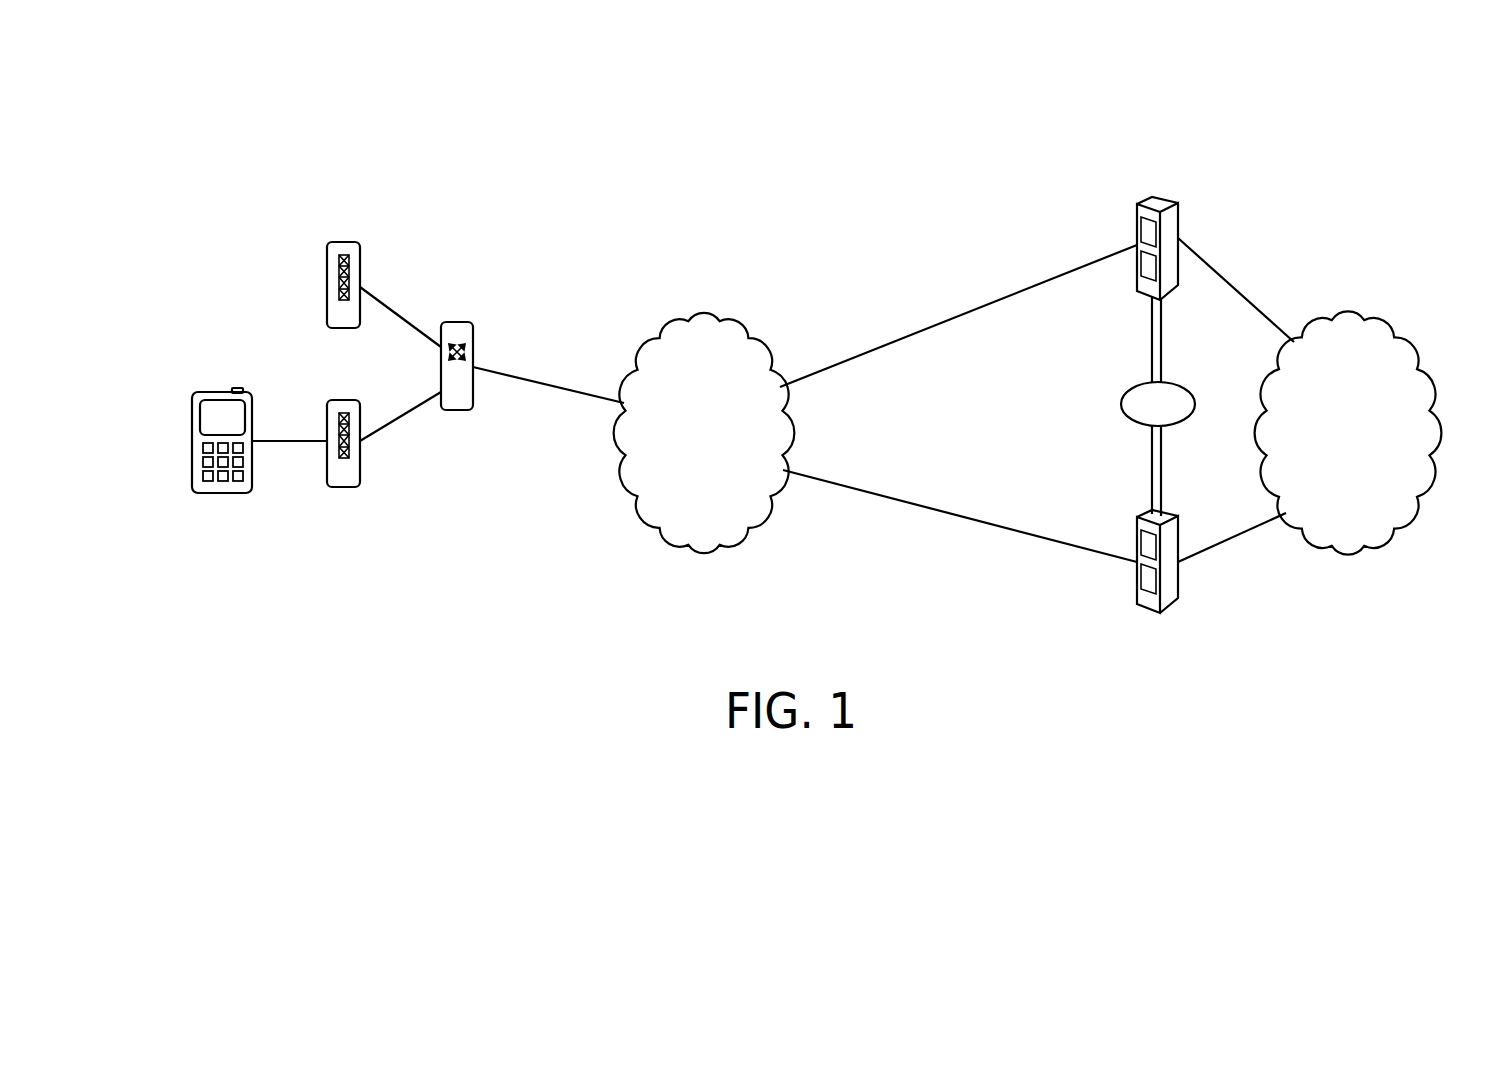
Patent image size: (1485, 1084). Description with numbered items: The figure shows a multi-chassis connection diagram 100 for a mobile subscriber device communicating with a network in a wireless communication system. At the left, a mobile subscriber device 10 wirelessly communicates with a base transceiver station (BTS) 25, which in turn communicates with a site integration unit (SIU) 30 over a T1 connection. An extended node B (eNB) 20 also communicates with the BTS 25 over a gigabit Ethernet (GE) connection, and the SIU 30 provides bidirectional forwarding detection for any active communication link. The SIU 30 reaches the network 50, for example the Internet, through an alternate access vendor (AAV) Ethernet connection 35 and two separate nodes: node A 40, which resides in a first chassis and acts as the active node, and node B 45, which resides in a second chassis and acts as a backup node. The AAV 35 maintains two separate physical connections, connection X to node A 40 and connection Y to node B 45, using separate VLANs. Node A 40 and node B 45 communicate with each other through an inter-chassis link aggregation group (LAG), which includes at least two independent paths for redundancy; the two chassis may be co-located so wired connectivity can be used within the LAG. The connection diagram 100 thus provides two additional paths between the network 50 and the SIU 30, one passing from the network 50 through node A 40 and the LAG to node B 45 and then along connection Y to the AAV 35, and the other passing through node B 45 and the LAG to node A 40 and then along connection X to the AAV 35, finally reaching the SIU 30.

The multi-chassis connection diagram 100 is at (308, 115).
The mobile subscriber device 10 is at (222, 494).
The extended node B (eNB) 20 is at (327, 283).
The base transceiver station (BTS) 25 is at (343, 488).
The site integration unit (SIU) 30 is at (457, 322).
The alternate access vendor (AAV) Ethernet connection 35 is at (690, 318).
The node A 40 is at (1137, 277).
The node B 45 is at (1137, 530).
The network 50 is at (1336, 318).